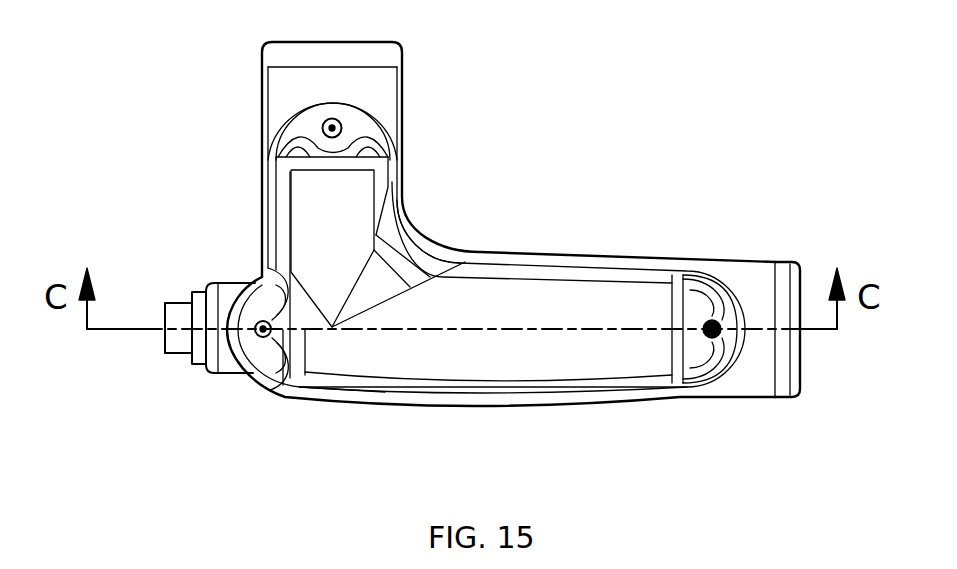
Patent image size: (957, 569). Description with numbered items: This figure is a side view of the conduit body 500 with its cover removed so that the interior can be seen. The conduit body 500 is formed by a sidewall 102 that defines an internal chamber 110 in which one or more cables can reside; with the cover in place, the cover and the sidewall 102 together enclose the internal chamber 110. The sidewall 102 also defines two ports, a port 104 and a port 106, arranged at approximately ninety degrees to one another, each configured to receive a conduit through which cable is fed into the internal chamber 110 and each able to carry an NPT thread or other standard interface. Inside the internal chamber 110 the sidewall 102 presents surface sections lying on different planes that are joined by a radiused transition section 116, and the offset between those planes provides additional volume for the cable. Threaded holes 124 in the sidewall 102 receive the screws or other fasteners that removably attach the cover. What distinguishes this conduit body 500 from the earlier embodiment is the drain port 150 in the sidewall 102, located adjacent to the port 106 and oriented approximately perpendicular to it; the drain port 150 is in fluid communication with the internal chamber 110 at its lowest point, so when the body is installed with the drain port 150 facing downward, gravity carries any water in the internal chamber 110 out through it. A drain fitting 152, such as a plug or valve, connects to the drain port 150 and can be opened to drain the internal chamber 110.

The conduit body 500 is at (579, 108).
The sidewall 102 is at (598, 398).
The port 104 is at (763, 260).
The port 106 is at (270, 82).
The internal chamber 110 is at (473, 305).
The radiused transition section 116 is at (427, 227).
The threaded holes 124 is at (343, 128).
The drain port 150 is at (223, 377).
The drain fitting 152 is at (167, 356).